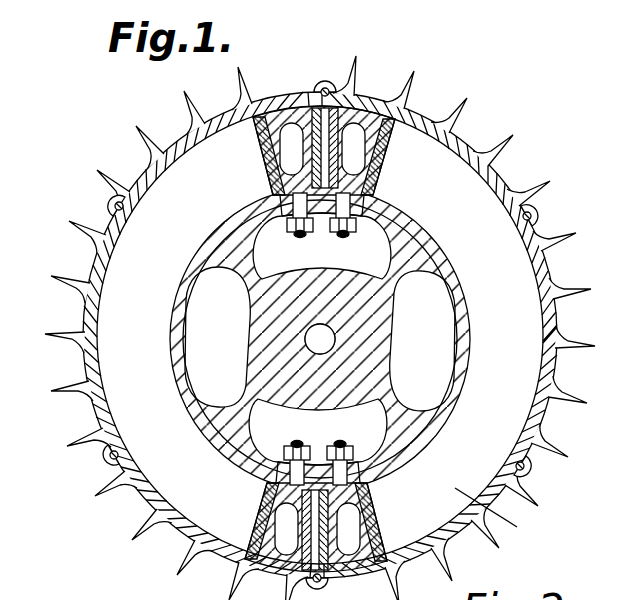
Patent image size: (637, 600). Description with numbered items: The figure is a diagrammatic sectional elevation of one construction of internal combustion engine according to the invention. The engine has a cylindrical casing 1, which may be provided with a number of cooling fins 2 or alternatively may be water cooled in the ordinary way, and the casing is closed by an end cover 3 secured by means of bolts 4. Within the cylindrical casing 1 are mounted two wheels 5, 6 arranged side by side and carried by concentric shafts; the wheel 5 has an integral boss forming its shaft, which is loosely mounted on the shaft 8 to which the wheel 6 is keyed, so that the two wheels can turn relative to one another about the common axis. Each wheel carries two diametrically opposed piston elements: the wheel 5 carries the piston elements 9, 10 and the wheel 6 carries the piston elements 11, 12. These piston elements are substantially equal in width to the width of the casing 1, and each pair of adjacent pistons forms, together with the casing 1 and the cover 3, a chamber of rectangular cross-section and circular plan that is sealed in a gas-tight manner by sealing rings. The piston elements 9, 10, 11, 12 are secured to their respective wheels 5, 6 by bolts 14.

The cylindrical casing 1 is at (492, 180).
The cooling fins 2 is at (187, 100).
The end cover 3 is at (496, 524).
The bolts 4 is at (112, 208).
The wheel 5 is at (175, 357).
The wheel 6 is at (386, 204).
The shaft 8 is at (327, 345).
The piston element 9 is at (270, 156).
The piston element 10 is at (375, 513).
The piston element 11 is at (378, 164).
The piston element 12 is at (268, 520).
The bolts 14 is at (308, 238).